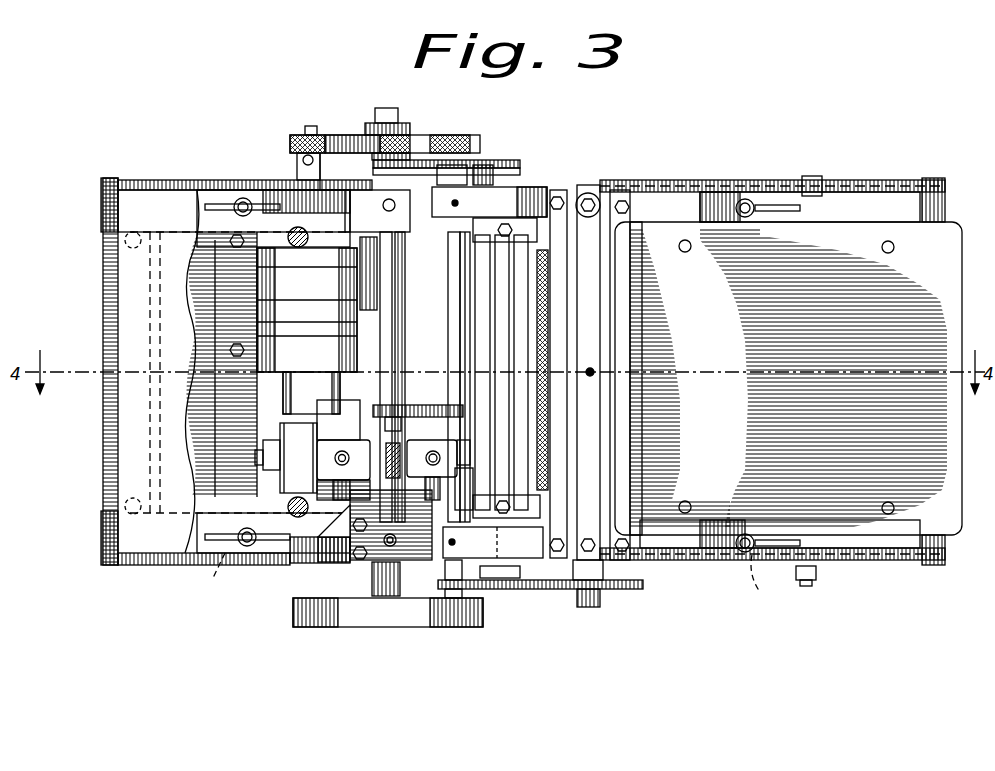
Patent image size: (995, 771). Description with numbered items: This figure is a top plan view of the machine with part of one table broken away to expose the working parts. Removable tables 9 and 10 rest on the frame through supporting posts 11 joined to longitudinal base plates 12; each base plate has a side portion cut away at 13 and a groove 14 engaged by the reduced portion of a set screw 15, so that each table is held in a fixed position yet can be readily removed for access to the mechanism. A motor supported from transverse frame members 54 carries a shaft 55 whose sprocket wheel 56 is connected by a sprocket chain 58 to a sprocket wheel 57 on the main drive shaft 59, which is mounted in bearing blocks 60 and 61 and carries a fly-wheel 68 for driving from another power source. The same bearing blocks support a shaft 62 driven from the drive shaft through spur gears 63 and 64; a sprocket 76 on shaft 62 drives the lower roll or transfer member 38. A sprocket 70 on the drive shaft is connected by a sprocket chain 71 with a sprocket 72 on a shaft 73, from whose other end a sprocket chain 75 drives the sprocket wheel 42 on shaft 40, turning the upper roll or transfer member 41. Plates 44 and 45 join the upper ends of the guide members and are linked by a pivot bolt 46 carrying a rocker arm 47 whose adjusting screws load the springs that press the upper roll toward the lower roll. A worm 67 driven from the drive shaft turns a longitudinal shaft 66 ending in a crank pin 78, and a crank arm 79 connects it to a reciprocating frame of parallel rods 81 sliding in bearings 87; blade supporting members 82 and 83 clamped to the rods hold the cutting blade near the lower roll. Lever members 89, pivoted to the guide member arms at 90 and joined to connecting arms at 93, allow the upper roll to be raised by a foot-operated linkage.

The removable table 9 is at (792, 263).
The removable table 10 is at (118, 273).
The supporting post 11 is at (298, 232).
The longitudinal base plate 12 is at (316, 215).
The cut away portion 13 is at (300, 548).
The groove 14 is at (489, 586).
The set screw 15 is at (245, 200).
The lower roll or transfer member 38 is at (525, 345).
The shaft 40 is at (588, 607).
The upper roll or transfer member 41 is at (640, 327).
The sprocket wheel 42 is at (610, 590).
The plate 44 is at (625, 230).
The plate 45 is at (540, 225).
The pivot bolt 46 is at (600, 375).
The rocker arm 47 is at (590, 235).
The transverse frame member 54 is at (225, 270).
The motor shaft 55 is at (263, 118).
The sprocket wheel 56 is at (310, 126).
The sprocket wheel 57 is at (410, 135).
The sprocket chain 58 is at (378, 108).
The main drive shaft 59 is at (393, 312).
The bearing block 60 is at (372, 153).
The bearing block 61 is at (415, 600).
The shaft 62 is at (478, 318).
The spur gear 63 is at (400, 424).
The spur gear 64 is at (423, 405).
The shaft 66 is at (278, 448).
The worm 67 is at (387, 483).
The fly-wheel 68 is at (370, 620).
The sprocket 70 is at (410, 160).
The sprocket chain 71 is at (440, 165).
The sprocket 72 is at (490, 187).
The shaft 73 is at (457, 285).
The sprocket chain 75 is at (530, 590).
The sprocket 76 is at (475, 590).
The crank pin 78 is at (470, 448).
The crank arm 79 is at (470, 480).
The spaced rod 81 is at (515, 330).
The blade supporting member 82 is at (520, 225).
The blade supporting member 83 is at (512, 515).
The bearing 87 is at (545, 588).
The lever member 89 is at (700, 185).
The pivot 90 is at (690, 180).
The pivot 93 is at (808, 580).